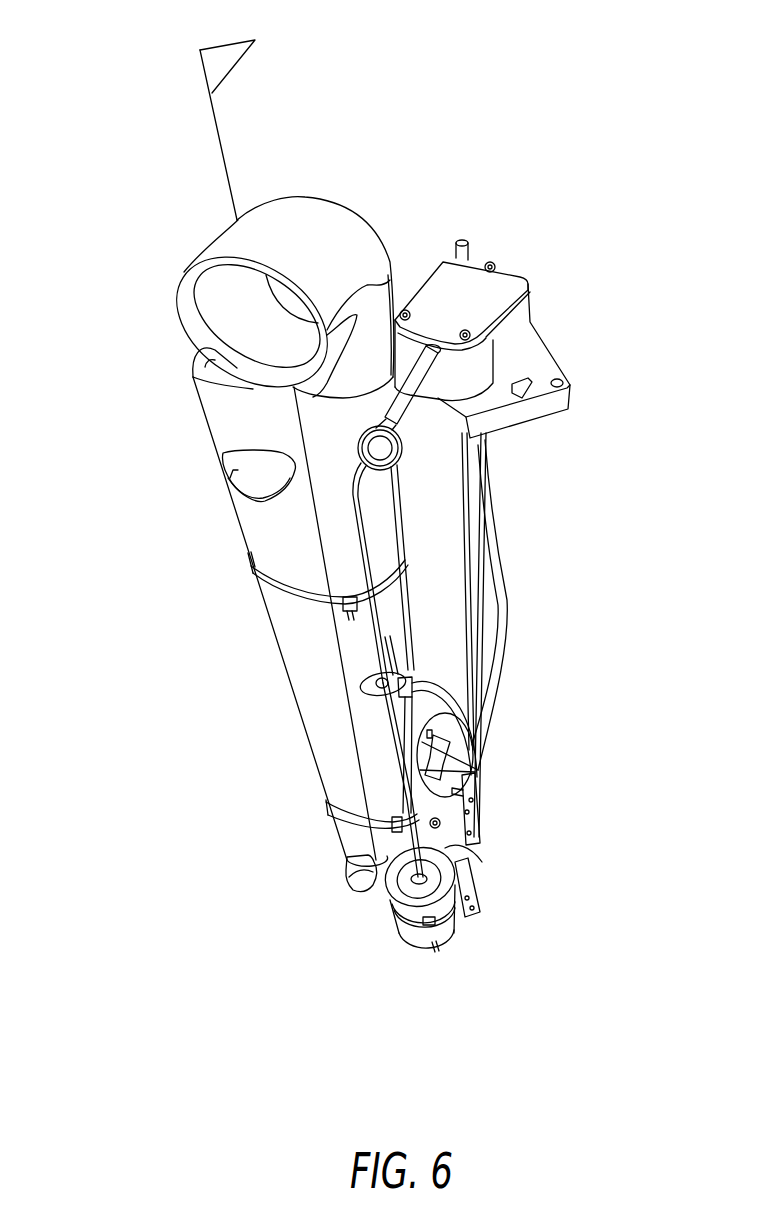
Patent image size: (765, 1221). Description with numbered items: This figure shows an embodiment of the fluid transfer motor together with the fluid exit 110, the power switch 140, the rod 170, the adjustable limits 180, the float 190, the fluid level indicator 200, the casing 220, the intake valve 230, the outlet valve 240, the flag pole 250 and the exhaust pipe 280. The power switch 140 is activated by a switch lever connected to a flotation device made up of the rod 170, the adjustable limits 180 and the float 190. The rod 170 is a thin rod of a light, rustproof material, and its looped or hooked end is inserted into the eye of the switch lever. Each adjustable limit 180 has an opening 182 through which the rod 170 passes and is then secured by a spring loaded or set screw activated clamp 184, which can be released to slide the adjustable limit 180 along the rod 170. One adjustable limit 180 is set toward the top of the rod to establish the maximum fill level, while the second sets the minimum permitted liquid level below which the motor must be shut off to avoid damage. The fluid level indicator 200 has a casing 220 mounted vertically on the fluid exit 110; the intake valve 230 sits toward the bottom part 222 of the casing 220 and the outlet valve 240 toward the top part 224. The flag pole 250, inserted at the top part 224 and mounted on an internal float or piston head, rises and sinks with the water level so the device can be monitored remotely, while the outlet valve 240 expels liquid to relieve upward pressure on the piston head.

The flag pole 250 is at (226, 131).
The exhaust pipe 280 is at (319, 193).
The power switch 140 is at (513, 323).
The fluid level indicator 200 is at (186, 386).
The top part 224 is at (203, 434).
The outlet valve 240 is at (227, 483).
The fluid exit 110 is at (321, 494).
The casing 220 is at (253, 570).
The bottom part 222 is at (338, 857).
The rod 170 is at (360, 508).
The adjustable limit 180 is at (362, 678).
The opening 182 is at (386, 679).
The clamp 184 is at (408, 688).
The intake valve 230 is at (352, 888).
The float 190 is at (398, 900).